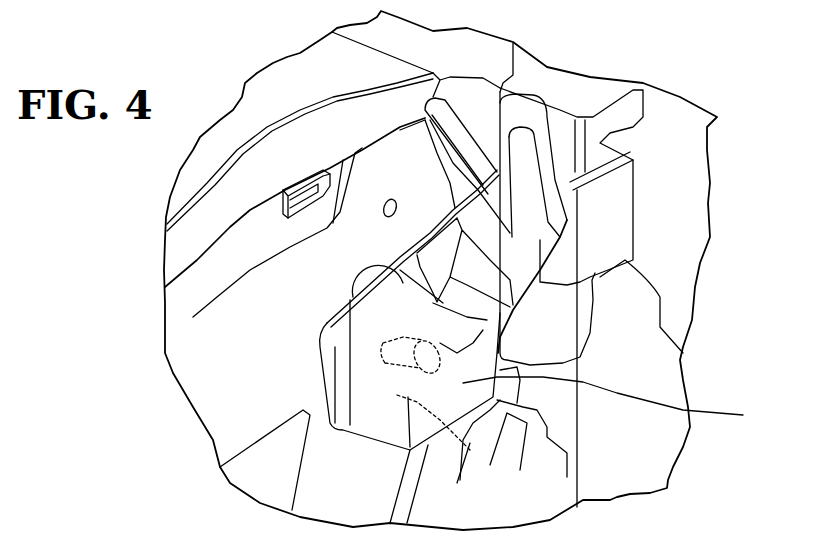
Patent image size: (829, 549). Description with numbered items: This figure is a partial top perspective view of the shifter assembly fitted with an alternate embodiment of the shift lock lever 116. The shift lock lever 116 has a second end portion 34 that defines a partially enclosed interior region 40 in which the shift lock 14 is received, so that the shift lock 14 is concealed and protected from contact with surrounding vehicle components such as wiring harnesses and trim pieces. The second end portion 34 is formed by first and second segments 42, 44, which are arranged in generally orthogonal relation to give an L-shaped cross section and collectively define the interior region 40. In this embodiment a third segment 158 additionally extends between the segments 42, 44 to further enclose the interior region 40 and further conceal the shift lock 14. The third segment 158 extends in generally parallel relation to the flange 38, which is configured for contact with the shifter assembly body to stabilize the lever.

The second end portion 34 is at (290, 378).
The shift lock 14 is at (433, 335).
The vertical flange 38 is at (333, 323).
The second segment 44 is at (411, 296).
The shift lock lever 116 is at (422, 203).
The third segment 158 is at (626, 399).
The interior region 40 is at (470, 455).
The first segment 42 is at (379, 407).